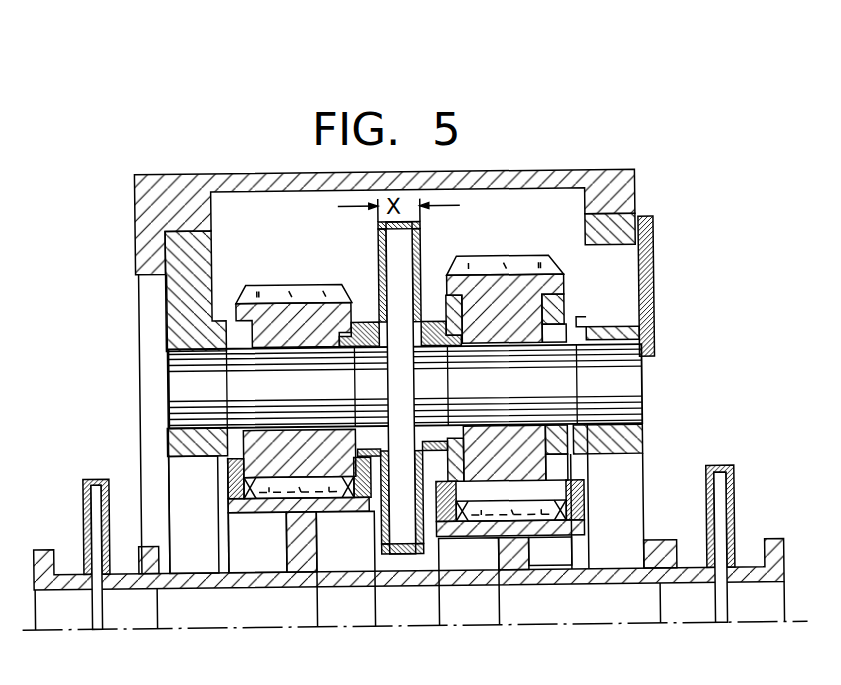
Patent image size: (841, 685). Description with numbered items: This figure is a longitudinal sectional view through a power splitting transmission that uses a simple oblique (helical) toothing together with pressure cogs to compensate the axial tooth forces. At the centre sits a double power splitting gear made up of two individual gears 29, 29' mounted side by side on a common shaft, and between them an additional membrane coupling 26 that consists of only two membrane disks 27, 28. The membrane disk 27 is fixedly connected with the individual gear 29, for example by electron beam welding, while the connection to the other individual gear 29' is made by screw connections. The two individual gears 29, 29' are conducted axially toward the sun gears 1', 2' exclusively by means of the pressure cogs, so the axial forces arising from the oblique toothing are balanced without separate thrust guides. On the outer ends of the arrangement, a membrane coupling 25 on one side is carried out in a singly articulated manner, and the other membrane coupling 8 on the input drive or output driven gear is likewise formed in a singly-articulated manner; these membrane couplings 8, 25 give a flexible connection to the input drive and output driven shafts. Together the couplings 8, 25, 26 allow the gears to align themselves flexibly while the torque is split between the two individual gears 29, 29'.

The membrane coupling 8 is at (66, 490).
The membrane coupling 25 is at (748, 466).
The additional membrane coupling 26 is at (405, 570).
The membrane disk 27 is at (380, 266).
The membrane disk 28 is at (422, 251).
The individual gear 29 is at (293, 298).
The individual gear 29' is at (505, 283).
The sun gear 1' is at (299, 489).
The sun gear 2' is at (510, 501).